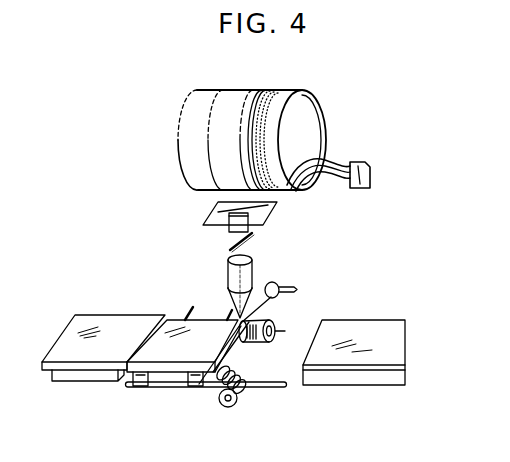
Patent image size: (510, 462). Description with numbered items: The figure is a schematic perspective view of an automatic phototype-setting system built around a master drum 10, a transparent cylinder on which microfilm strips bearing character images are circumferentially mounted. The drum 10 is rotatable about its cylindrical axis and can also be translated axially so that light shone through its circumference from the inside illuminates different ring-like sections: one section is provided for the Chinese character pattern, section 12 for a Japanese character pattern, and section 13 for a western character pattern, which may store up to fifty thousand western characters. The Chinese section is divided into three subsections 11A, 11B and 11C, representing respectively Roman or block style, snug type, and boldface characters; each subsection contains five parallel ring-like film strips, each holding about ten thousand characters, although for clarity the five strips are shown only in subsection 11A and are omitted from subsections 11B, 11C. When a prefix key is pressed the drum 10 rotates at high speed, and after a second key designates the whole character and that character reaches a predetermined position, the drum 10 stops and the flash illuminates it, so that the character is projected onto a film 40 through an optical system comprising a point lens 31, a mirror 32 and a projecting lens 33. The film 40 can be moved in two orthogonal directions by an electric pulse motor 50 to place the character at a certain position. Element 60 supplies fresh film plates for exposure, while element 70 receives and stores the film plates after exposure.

The master drum 10 is at (260, 121).
The ring-like section 13 is at (200, 107).
The ring-like section 12 is at (232, 107).
The subsection 11C is at (260, 100).
The subsection 11B is at (280, 92).
The subsection 11A is at (282, 92).
The point lens 31 is at (262, 213).
The mirror 32 is at (253, 241).
The projecting lens 33 is at (253, 266).
The film 40 is at (183, 355).
The electric pulse motor 50 is at (236, 403).
The film plate supply element 60 is at (100, 377).
The film plate receiving and storing means 70 is at (378, 320).